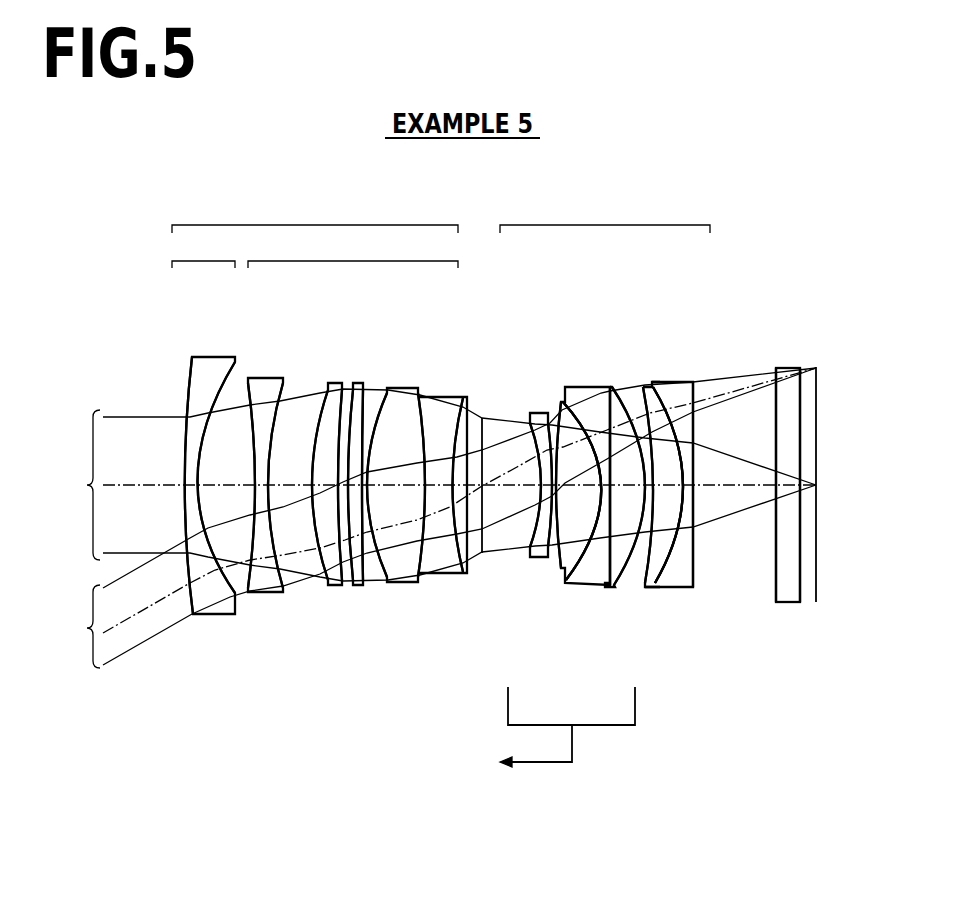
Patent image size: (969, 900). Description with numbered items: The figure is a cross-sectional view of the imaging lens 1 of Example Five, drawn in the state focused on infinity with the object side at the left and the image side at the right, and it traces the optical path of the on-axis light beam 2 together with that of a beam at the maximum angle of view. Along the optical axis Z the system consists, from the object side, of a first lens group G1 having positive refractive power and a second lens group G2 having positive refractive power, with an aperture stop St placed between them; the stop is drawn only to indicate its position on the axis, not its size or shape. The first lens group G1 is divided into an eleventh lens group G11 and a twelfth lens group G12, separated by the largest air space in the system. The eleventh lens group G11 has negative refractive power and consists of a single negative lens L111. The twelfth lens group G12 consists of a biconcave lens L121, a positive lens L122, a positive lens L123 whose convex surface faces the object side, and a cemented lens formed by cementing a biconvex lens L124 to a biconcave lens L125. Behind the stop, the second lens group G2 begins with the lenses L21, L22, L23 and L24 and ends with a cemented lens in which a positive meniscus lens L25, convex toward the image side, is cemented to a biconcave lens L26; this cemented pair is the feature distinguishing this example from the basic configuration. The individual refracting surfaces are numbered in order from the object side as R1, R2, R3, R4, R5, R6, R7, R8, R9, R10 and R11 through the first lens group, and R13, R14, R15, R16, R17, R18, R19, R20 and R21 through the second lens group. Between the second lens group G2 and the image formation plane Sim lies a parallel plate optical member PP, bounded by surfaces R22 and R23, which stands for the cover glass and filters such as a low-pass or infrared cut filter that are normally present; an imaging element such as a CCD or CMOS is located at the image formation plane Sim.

The imaging lens 1 is at (505, 199).
The on-axis light beam 2 is at (444, 518).
The optical axis Z is at (106, 483).
The first lens group G1 is at (315, 215).
The second lens group G2 is at (605, 215).
The eleventh lens group G11 is at (203, 250).
The twelfth lens group G12 is at (353, 250).
The negative lens L111 is at (207, 357).
The biconcave lens L121 is at (265, 378).
The positive lens L122 is at (335, 383).
The positive lens L123 is at (357, 383).
The biconvex lens L124 is at (400, 388).
The biconcave lens L125 is at (440, 397).
The lens L21 is at (538, 413).
The lens L22 is at (570, 387).
The lens L23 is at (603, 387).
The lens L24 is at (628, 387).
The positive meniscus lens L25 is at (658, 382).
The biconcave lens L26 is at (680, 382).
The aperture stop St is at (486, 420).
The parallel plate optical member PP is at (790, 368).
The image formation plane Sim is at (818, 377).
The lens surface R1 is at (190, 608).
The lens surface R2 is at (228, 592).
The lens surface R3 is at (248, 592).
The lens surface R4 is at (283, 592).
The lens surface R5 is at (326, 586).
The lens surface R6 is at (343, 586).
The lens surface R7 is at (354, 586).
The lens surface R8 is at (364, 586).
The lens surface R9 is at (389, 583).
The lens surface R10 is at (418, 583).
The lens surface R11 is at (466, 574).
The lens surface R13 is at (530, 557).
The lens surface R14 is at (548, 557).
The lens surface R15 is at (565, 570).
The lens surface R16 is at (570, 581).
The lens surface R17 is at (609, 585).
The lens surface R18 is at (616, 586).
The lens surface R19 is at (647, 587).
The lens surface R20 is at (656, 587).
The lens surface R21 is at (694, 588).
The surface R22 of optical member PP R22 is at (776, 603).
The surface R23 of optical member PP R23 is at (800, 603).